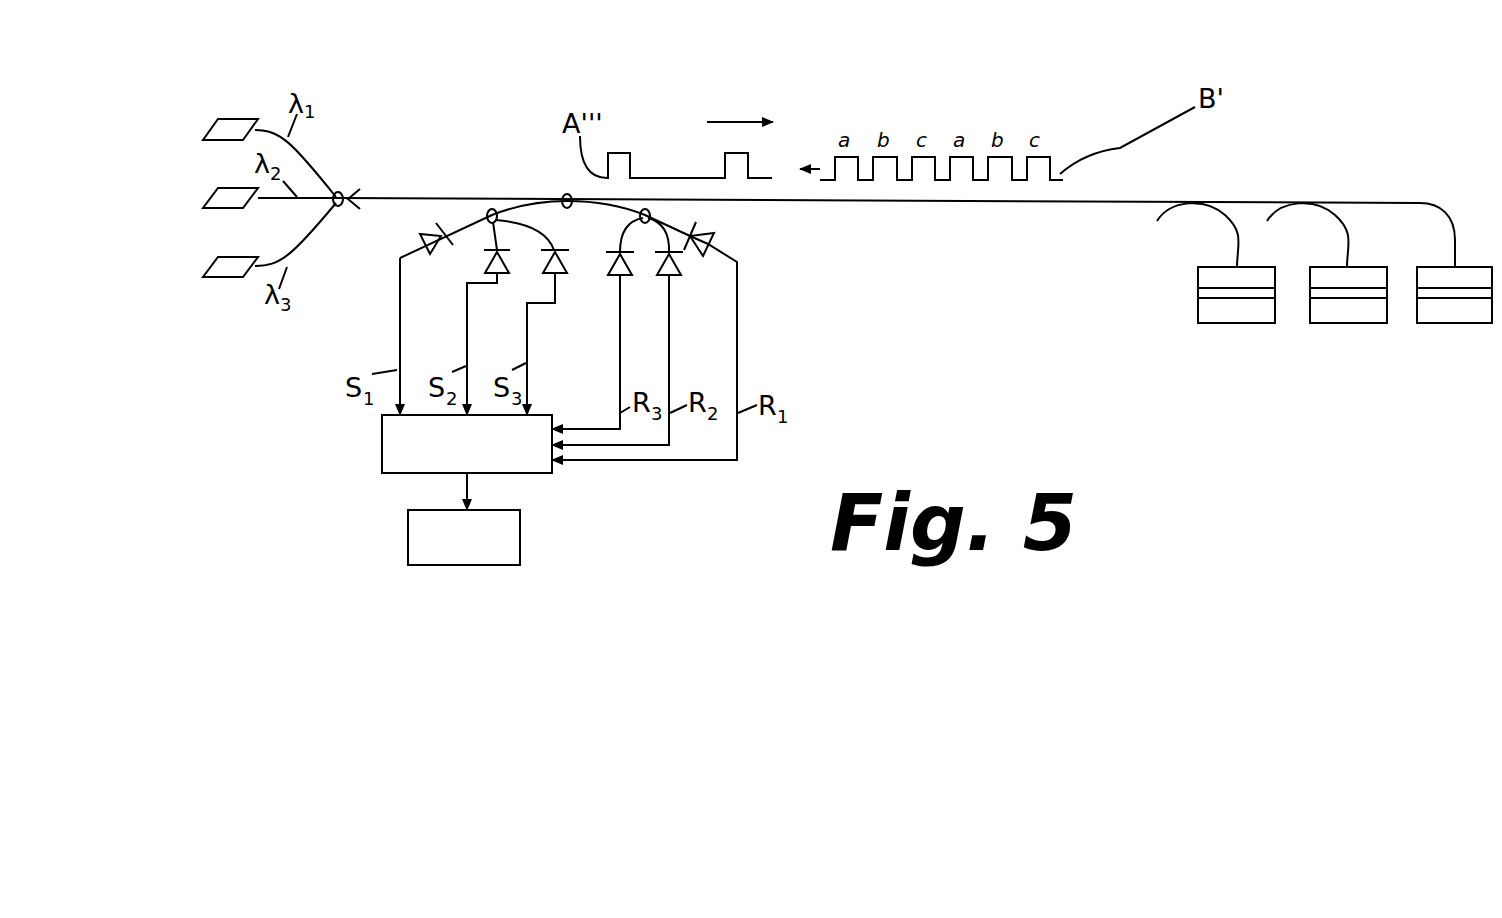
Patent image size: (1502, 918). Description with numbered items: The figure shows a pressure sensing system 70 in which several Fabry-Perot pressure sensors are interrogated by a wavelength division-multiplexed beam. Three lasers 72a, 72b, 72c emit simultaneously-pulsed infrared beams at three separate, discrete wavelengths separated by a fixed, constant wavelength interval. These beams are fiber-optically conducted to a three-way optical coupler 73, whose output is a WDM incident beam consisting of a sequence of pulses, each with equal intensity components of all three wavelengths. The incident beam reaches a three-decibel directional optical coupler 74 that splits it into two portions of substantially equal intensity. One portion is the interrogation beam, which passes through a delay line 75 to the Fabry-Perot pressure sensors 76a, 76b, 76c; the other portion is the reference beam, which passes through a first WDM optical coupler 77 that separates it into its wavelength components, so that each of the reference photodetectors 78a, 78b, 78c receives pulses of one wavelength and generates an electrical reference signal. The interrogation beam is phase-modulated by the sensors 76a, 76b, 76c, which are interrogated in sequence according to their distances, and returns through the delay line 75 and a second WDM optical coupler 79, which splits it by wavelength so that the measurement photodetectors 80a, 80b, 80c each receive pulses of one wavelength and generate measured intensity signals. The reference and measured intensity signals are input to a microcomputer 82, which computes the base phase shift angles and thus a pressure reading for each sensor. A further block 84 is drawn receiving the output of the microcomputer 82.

The pressure sensing system 70 is at (452, 83).
The laser 72a is at (203, 137).
The laser 72b is at (203, 206).
The laser 72c is at (203, 275).
The three-way optical coupler 73 is at (343, 193).
The 3 dB directional optical coupler 74 is at (562, 194).
The delay line 75 is at (865, 203).
The Fabry-Perot pressure sensor 76a is at (1268, 323).
The Fabry-Perot pressure sensor 76b is at (1378, 323).
The Fabry-Perot pressure sensor 76c is at (1477, 323).
The first WDM optical coupler 77 is at (645, 223).
The reference photodetector 78a is at (716, 237).
The reference photodetector 78b is at (680, 277).
The reference photodetector 78c is at (611, 277).
The second WDM optical coupler 79 is at (486, 208).
The measurement photodetector 80a is at (420, 240).
The measurement photodetector 80b is at (487, 265).
The measurement photodetector 80c is at (545, 274).
The microcomputer 82 is at (467, 462).
The output unit 84 is at (464, 537).